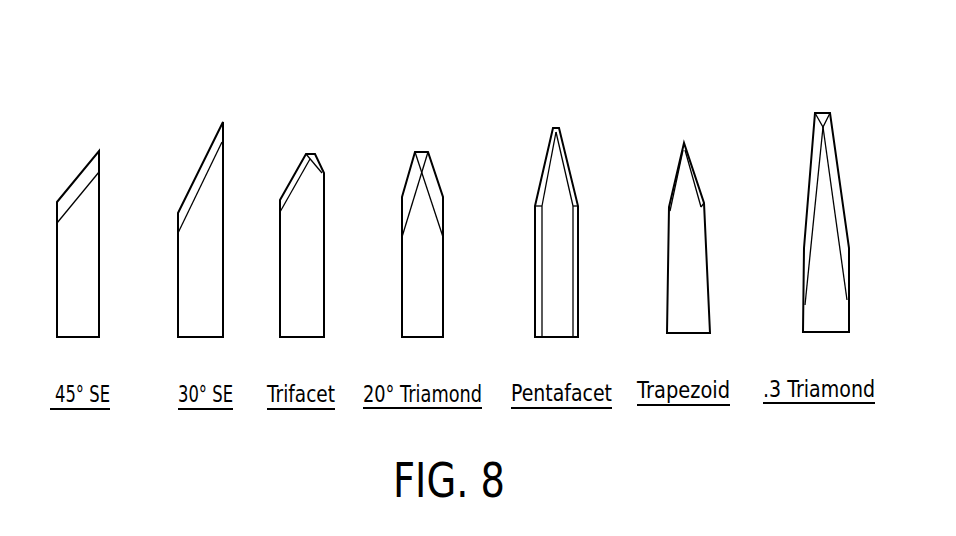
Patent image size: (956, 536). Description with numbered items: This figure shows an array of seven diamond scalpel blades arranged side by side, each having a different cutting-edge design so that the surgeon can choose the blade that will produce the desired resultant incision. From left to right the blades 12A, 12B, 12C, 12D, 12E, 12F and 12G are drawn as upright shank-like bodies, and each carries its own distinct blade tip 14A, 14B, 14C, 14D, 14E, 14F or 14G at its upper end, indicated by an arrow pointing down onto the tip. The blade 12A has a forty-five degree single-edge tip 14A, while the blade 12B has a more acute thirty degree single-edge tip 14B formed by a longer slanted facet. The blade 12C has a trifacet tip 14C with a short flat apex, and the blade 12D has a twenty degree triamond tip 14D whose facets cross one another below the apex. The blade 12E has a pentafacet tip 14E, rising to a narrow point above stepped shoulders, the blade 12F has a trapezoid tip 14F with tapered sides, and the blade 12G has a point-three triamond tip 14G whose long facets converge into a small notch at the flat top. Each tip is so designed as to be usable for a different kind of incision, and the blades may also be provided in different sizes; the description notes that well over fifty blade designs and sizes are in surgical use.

The blade tip 14A is at (92, 98).
The blade tip 14B is at (208, 98).
The blade tip 14C is at (317, 98).
The blade tip 14D is at (424, 98).
The blade tip 14E is at (552, 98).
The blade tip 14F is at (687, 96).
The blade tip 14G is at (822, 96).
The blade 12A is at (95, 308).
The blade 12B is at (220, 308).
The blade 12C is at (320, 308).
The blade 12D is at (440, 308).
The blade 12E is at (573, 307).
The blade 12F is at (703, 305).
The blade 12G is at (843, 306).